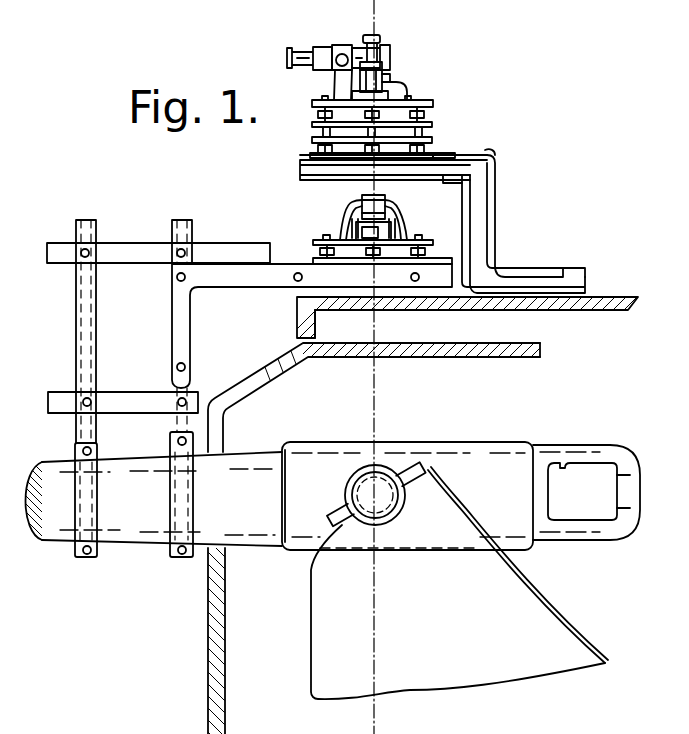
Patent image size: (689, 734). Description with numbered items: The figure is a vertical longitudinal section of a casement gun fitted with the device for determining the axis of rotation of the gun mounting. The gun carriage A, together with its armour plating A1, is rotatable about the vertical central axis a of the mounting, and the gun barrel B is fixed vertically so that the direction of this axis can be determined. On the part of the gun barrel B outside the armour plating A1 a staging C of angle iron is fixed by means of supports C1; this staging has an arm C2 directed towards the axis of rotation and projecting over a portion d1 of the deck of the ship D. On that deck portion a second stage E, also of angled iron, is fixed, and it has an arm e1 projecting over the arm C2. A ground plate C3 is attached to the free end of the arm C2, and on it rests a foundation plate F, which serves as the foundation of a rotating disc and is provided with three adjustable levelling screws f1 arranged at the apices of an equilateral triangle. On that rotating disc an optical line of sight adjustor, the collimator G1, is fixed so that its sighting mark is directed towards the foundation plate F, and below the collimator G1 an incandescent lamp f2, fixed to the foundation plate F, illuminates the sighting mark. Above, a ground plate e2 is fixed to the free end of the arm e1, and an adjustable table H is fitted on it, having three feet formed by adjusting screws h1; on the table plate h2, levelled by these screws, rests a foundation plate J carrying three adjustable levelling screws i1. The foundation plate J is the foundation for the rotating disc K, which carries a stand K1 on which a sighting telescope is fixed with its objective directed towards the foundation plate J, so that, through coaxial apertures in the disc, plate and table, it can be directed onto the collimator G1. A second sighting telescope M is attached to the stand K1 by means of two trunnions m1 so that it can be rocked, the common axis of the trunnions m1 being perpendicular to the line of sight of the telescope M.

The vertical central axis a is at (362, 367).
The rotating disc K is at (378, 34).
The stand K1 is at (395, 88).
The second sighting telescope M is at (296, 57).
The trunnions m1 is at (343, 47).
The foundation plate J is at (430, 102).
The adjustable levelling screws i1 is at (318, 112).
The adjustable table H is at (335, 127).
The adjusting screws h1 is at (437, 143).
The table plate h2 is at (437, 122).
The arm e1 is at (322, 170).
The ground plate e2 is at (455, 157).
The second stage E is at (484, 179).
The collimator G1 is at (368, 197).
The incandescent lamp f2 is at (398, 226).
The foundation plate F is at (318, 239).
The levelling screws f1 is at (431, 224).
The ground plate C3 is at (430, 250).
The arm C2 is at (251, 281).
The staging C is at (182, 327).
The supports C1 is at (182, 523).
The deck of the ship D is at (601, 293).
The portion of the deck d1 is at (352, 303).
The armour plating A1 is at (430, 357).
The gun barrel B is at (263, 524).
The gun carriage A is at (536, 625).